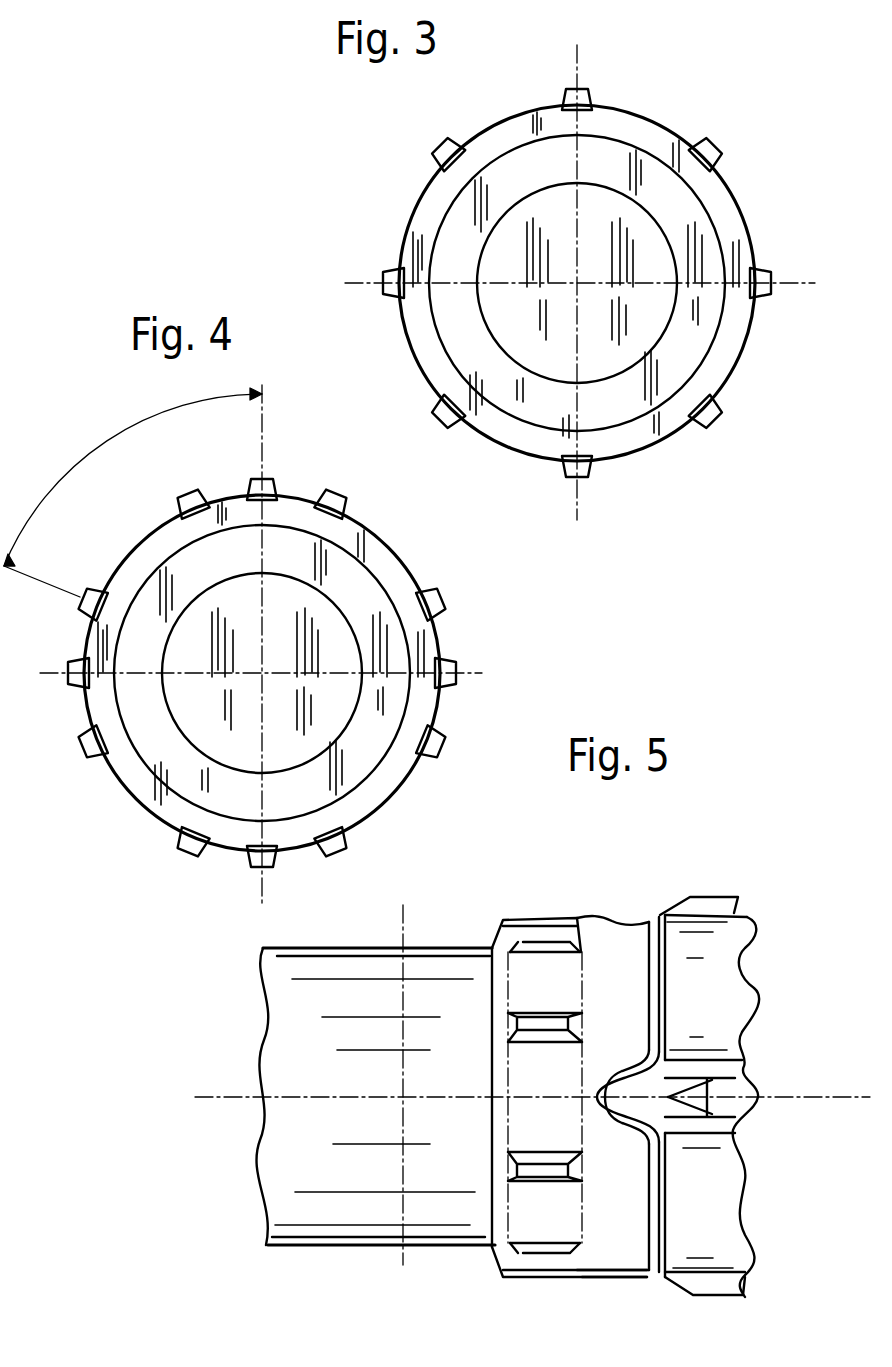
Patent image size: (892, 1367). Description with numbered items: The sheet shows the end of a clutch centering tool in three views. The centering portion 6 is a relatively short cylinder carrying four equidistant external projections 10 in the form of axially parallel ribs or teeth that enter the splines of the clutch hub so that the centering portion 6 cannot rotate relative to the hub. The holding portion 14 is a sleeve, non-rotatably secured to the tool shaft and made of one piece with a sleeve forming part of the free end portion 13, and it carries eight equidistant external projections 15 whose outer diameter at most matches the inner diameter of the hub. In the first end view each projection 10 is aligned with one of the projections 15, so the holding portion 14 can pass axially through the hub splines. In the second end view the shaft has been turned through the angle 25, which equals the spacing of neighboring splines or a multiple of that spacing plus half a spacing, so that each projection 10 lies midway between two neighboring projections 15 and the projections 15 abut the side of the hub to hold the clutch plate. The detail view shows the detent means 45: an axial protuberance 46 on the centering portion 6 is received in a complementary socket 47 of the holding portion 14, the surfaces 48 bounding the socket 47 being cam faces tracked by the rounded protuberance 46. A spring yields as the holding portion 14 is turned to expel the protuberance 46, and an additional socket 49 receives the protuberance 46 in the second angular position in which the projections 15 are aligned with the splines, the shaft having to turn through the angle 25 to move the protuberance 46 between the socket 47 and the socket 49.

In FIG. 5, the centering portion 6 is at (713, 977).
In FIG. 3, the external projections 10 is at (585, 95).
In FIG. 4, the external projections 10 is at (268, 483).
In FIG. 5, the external projections 10 is at (707, 913).
In FIG. 3, the free end portion 13 is at (525, 178).
In FIG. 3, the holding portion 14 is at (415, 238).
In FIG. 5, the holding portion 14 is at (533, 965).
In FIG. 3, the external projections 15 is at (437, 153).
In FIG. 4, the external projections 15 is at (90, 597).
In FIG. 5, the external projections 15 is at (535, 1168).
In FIG. 4, the angle 25 is at (92, 452).
In FIG. 5, the detent means 45 is at (627, 1090).
In FIG. 5, the protuberance 46 is at (633, 1110).
In FIG. 5, the socket 47 is at (620, 1133).
In FIG. 5, the surfaces 48 is at (632, 1082).
In FIG. 5, the socket 49 is at (623, 921).